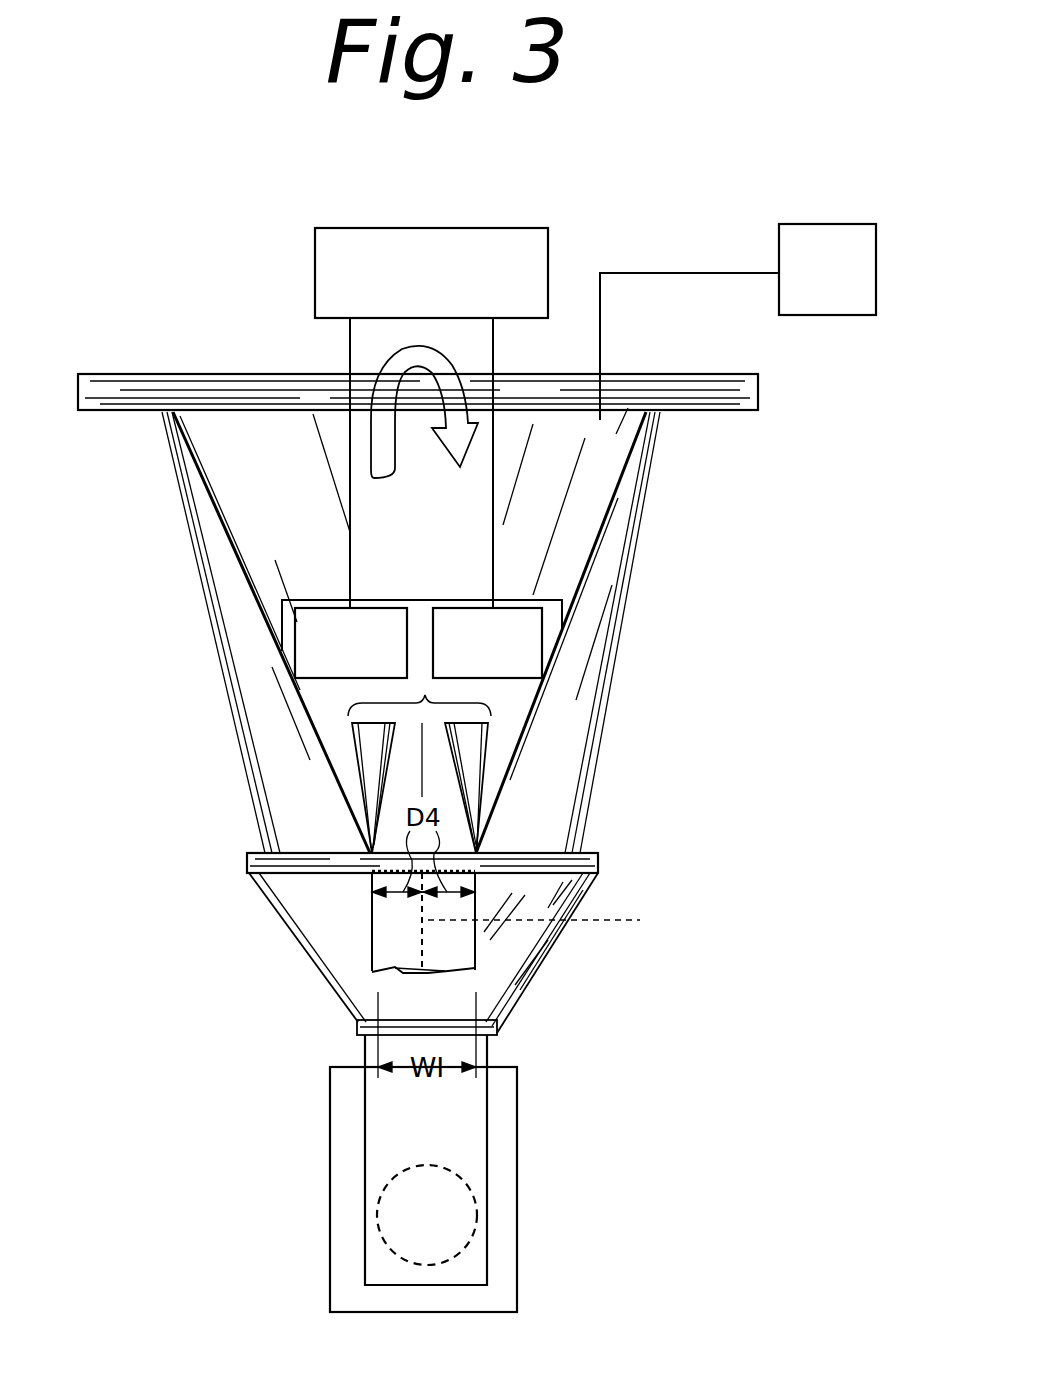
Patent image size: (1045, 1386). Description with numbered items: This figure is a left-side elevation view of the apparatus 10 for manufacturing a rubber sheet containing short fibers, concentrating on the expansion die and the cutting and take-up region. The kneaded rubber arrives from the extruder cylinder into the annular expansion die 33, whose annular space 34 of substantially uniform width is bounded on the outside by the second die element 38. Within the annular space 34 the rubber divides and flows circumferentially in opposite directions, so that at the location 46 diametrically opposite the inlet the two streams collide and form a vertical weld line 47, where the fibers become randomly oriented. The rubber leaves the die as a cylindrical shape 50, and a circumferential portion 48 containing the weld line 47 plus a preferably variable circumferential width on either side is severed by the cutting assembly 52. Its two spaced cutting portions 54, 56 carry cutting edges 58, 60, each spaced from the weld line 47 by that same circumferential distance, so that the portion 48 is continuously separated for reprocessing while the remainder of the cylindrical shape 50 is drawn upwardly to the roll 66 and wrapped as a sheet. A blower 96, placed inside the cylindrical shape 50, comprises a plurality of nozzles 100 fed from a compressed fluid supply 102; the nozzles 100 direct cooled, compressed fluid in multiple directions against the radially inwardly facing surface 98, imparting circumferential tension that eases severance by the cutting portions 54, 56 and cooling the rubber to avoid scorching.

The apparatus 10 is at (650, 1015).
The annular expansion die 33 is at (517, 1006).
The annular space 34 is at (463, 938).
The second die element 38 is at (552, 945).
The location diametrically opposite the inlet 46 is at (412, 980).
The weld line 47 is at (640, 920).
The removed circumferential portion 48 is at (378, 938).
The cylindrical shape 50 is at (537, 835).
The cutting assembly 52 is at (425, 684).
The cutting portion 54 is at (365, 757).
The cutting portion 56 is at (488, 760).
The cutting edge 58 is at (345, 868).
The cutting edge 60 is at (568, 846).
The roll 66 is at (844, 302).
The blower 96 is at (415, 617).
The radially inwardly facing surface 98 is at (625, 430).
The nozzles 100 is at (333, 674).
The compressed fluid supply 102 is at (452, 306).